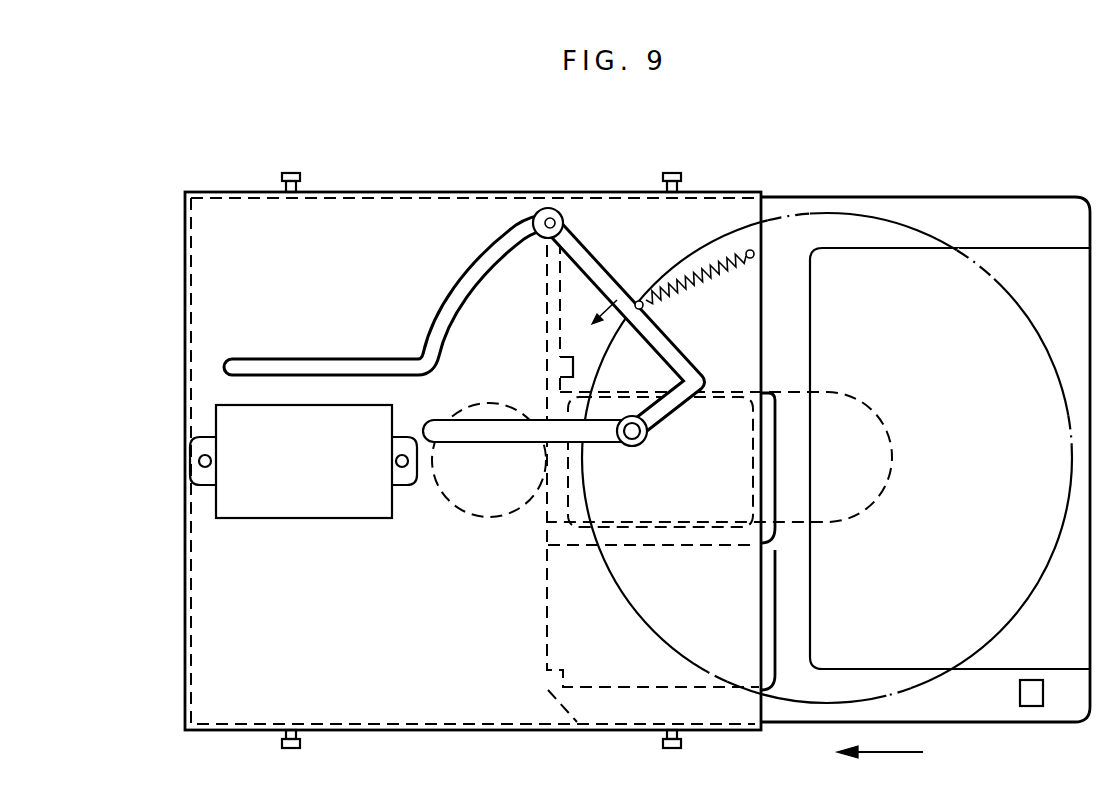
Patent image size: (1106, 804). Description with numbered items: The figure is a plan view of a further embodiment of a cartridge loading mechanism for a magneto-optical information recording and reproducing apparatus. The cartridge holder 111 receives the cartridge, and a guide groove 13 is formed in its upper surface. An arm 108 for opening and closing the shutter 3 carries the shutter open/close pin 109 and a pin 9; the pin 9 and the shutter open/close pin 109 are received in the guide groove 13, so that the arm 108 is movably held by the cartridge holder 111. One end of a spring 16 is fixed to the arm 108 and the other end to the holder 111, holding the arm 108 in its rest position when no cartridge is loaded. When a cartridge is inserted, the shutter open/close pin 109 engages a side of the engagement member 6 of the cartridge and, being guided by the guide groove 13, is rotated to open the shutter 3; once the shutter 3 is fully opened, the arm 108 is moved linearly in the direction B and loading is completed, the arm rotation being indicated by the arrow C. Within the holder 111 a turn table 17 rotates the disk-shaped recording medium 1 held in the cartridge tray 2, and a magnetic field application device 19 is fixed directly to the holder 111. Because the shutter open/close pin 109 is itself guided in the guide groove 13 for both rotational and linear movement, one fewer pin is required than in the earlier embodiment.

The disk-shaped recording medium 1 is at (937, 263).
The disk tray 2 is at (1042, 208).
The shutter 3 is at (547, 512).
The engagement member 6 is at (550, 290).
The pin 9 is at (643, 443).
The guide groove 13 is at (483, 257).
The spring 16 is at (733, 250).
The turn table 17 is at (458, 507).
The magnetic field application device 19 is at (275, 500).
The arm 108 is at (605, 275).
The shutter open/close pin 109 is at (555, 216).
The cartridge holder 111 is at (227, 212).
The direction B is at (880, 769).
The lever rotation direction C is at (593, 331).